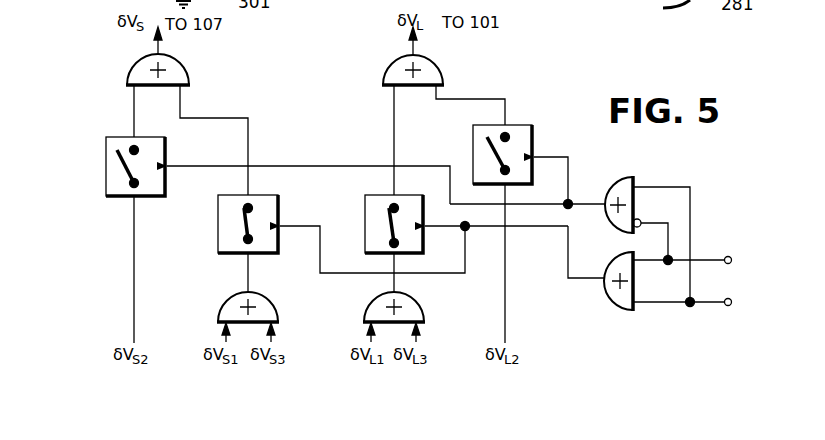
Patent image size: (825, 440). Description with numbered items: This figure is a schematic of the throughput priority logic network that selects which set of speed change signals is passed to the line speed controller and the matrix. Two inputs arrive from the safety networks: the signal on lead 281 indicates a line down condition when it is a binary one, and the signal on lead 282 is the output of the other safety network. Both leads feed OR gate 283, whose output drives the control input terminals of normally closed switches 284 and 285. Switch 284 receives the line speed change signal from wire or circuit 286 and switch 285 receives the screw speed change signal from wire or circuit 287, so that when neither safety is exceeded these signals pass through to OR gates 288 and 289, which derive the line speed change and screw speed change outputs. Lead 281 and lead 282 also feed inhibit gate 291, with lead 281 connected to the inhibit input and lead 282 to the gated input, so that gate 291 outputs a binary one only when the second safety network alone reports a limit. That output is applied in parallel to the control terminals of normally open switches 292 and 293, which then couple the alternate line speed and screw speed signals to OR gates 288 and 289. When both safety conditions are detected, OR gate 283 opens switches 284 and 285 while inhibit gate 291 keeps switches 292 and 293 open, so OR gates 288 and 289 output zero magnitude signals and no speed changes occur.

The lead 281 is at (700, 255).
The lead 282 is at (712, 305).
The OR gate 283 is at (614, 308).
The normally closed switch 284 is at (363, 198).
The normally closed switch 285 is at (218, 224).
The wire or circuit 286 is at (417, 305).
The wire or circuit 287 is at (269, 297).
The OR gate 288 is at (442, 70).
The OR gate 289 is at (190, 70).
The inhibit gate 291 is at (625, 176).
The normally open switch 292 is at (533, 130).
The normally open switch 293 is at (120, 135).